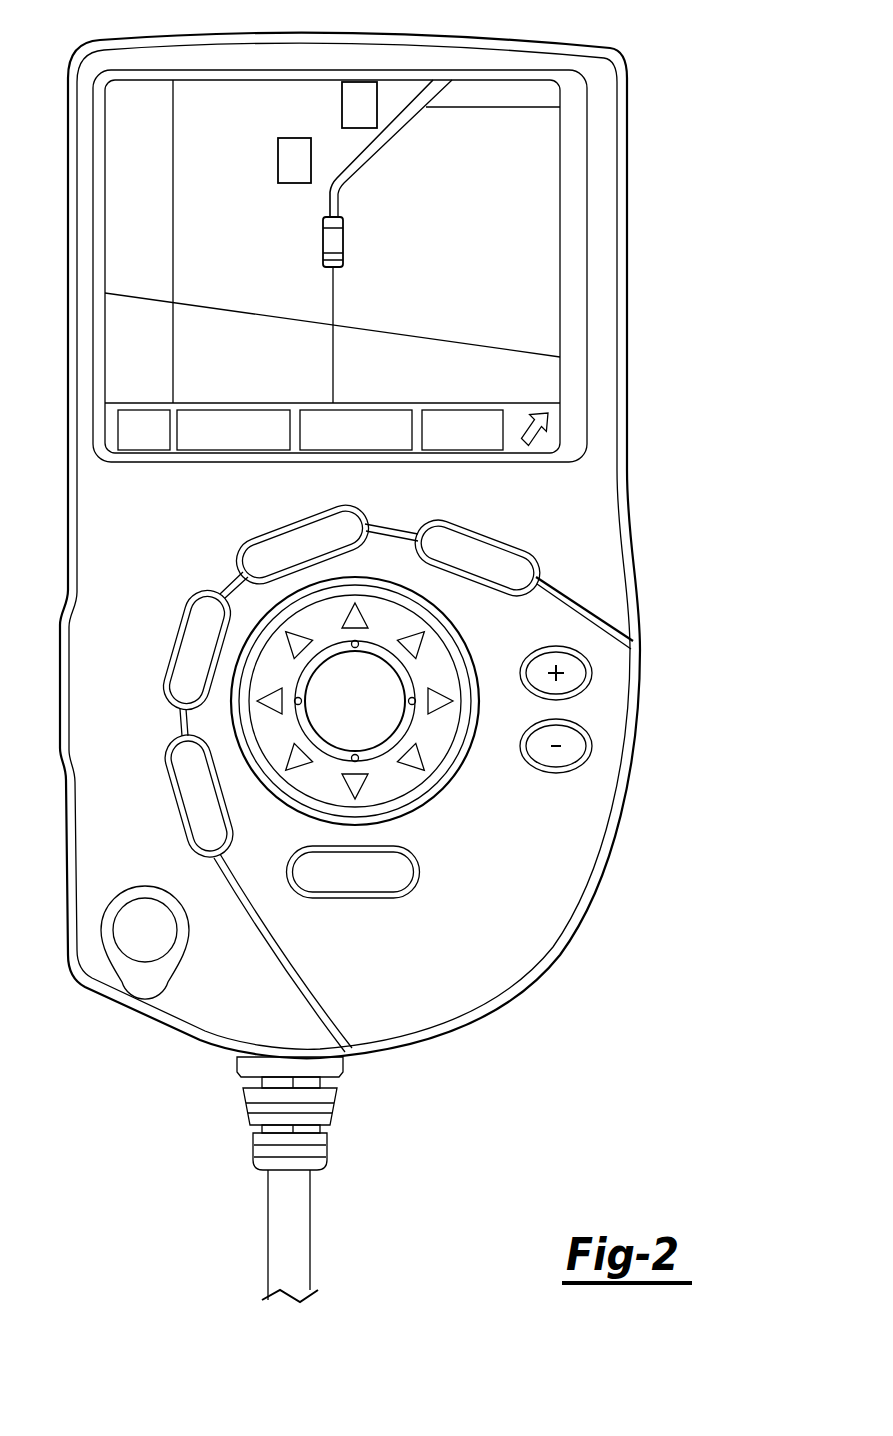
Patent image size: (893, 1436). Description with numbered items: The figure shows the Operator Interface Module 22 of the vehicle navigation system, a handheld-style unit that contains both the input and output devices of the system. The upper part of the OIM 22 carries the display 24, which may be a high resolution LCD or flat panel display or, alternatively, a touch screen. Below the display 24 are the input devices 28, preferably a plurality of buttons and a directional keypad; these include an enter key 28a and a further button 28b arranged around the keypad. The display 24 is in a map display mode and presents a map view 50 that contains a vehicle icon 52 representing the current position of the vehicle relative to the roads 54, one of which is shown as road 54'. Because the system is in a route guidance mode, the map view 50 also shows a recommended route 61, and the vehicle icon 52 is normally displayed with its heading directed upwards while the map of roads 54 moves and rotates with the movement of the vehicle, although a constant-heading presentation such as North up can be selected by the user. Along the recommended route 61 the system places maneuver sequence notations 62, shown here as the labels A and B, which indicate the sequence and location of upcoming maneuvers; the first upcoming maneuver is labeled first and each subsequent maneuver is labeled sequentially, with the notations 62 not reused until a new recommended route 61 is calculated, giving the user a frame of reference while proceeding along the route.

The Operator Interface Module 22 is at (725, 360).
The display 24 is at (594, 278).
The input devices 28 is at (448, 780).
The enter key 28a is at (507, 538).
The view button 28b is at (183, 603).
The map view 50 is at (568, 232).
The vehicle icon 52 is at (343, 220).
The roads 54 is at (332, 241).
The road 54' is at (520, 55).
The recommended route 61 is at (377, 143).
The maneuver sequence notation 62 is at (378, 90).